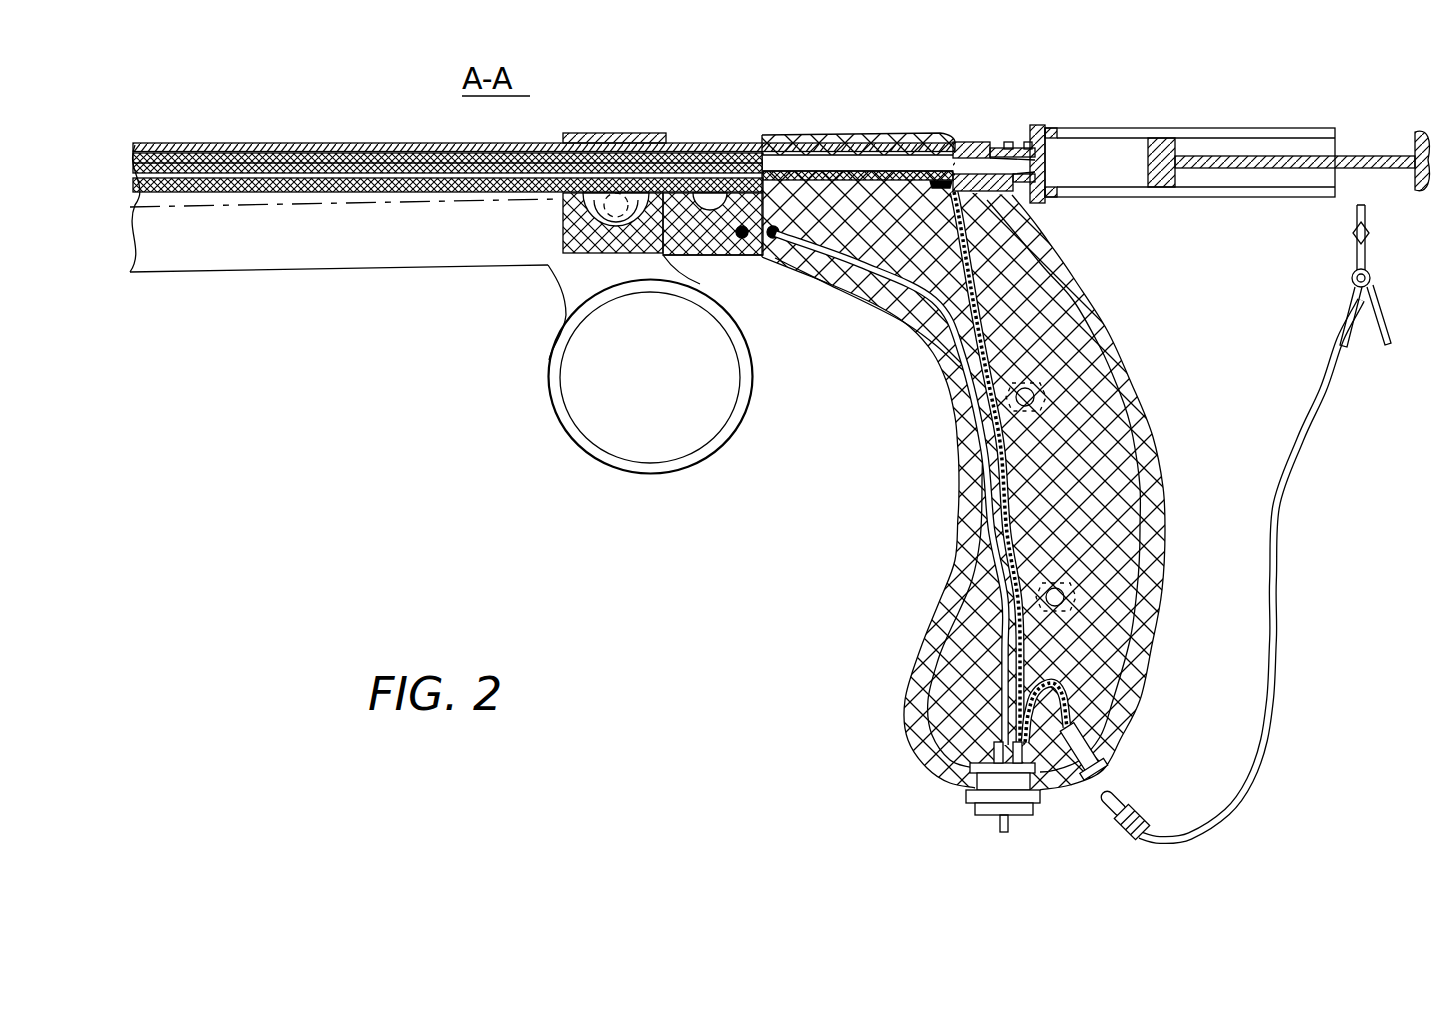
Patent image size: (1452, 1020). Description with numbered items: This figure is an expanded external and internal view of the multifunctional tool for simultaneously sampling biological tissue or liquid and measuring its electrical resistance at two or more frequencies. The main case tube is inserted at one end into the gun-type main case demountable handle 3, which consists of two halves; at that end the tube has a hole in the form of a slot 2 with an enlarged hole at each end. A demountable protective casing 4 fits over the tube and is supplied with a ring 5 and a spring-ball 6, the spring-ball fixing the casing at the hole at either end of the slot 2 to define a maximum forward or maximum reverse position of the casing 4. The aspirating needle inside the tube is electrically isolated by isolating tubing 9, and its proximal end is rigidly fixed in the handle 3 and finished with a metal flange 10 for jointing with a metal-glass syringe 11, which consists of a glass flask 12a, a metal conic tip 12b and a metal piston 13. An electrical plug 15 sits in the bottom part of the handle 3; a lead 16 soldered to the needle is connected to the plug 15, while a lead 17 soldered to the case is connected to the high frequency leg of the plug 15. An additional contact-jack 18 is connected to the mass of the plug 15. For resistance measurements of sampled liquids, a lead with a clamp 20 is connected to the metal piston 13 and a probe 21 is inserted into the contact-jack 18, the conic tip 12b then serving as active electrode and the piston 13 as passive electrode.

The slot 2 is at (640, 250).
The main case demountable handle 3 is at (955, 520).
The protective casing 4 is at (362, 250).
The ring 5 is at (645, 473).
The spring-ball 6 is at (612, 205).
The isolating tubing 9 is at (300, 145).
The metal flange 10 is at (965, 140).
The metal-glass syringe 11 is at (1120, 200).
The glass flask 12a is at (1198, 125).
The metal conic tip 12b is at (1045, 125).
The metal piston 13 is at (1375, 150).
The electrical plug 15 is at (972, 800).
The lead 16 is at (855, 272).
The lead 17 is at (742, 238).
The contact-jack 18 is at (1080, 790).
The clamp 20 is at (1372, 270).
The probe 21 is at (1125, 820).